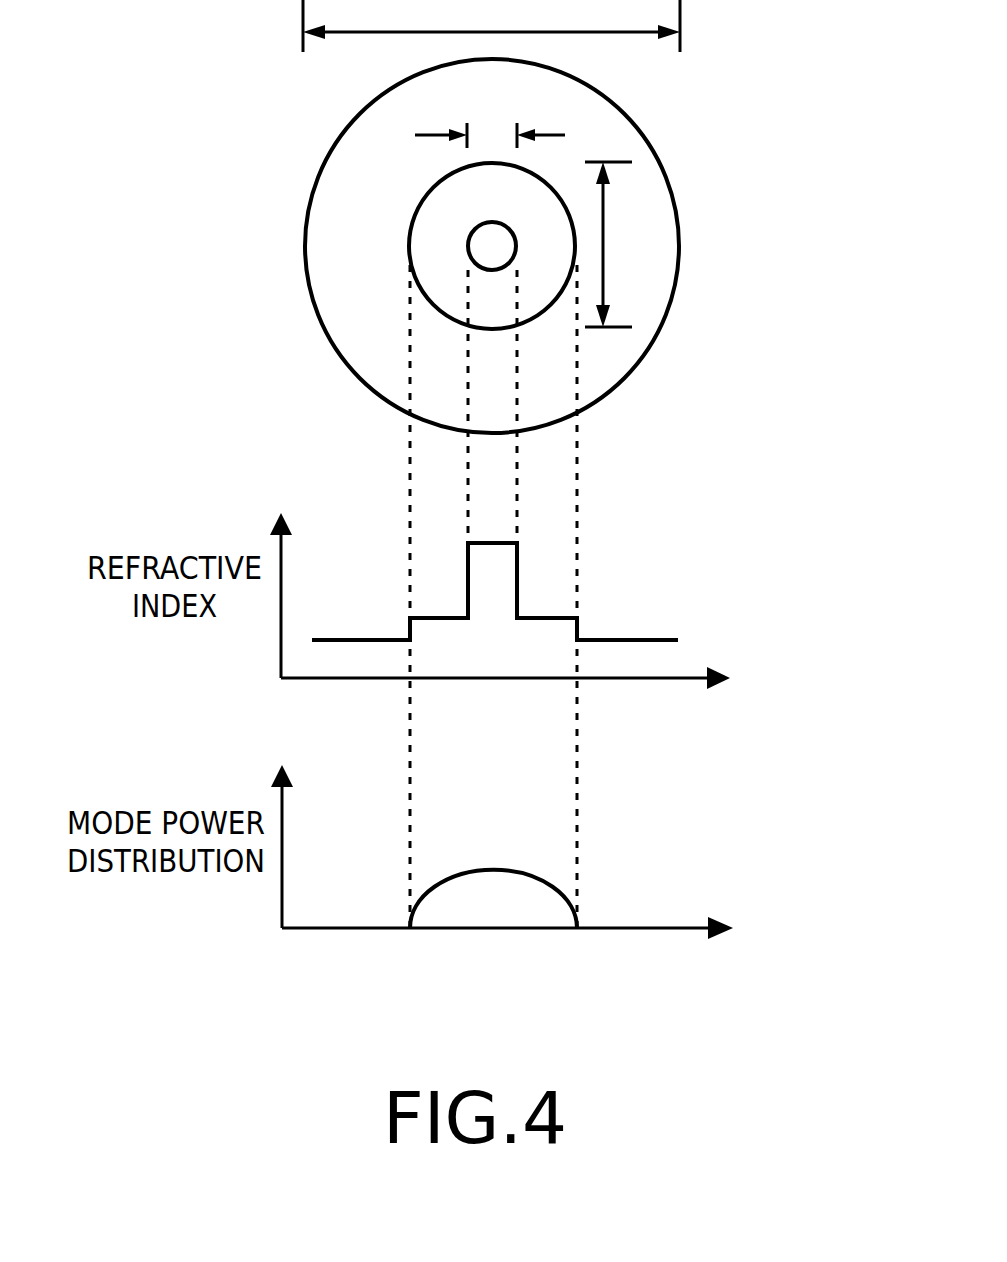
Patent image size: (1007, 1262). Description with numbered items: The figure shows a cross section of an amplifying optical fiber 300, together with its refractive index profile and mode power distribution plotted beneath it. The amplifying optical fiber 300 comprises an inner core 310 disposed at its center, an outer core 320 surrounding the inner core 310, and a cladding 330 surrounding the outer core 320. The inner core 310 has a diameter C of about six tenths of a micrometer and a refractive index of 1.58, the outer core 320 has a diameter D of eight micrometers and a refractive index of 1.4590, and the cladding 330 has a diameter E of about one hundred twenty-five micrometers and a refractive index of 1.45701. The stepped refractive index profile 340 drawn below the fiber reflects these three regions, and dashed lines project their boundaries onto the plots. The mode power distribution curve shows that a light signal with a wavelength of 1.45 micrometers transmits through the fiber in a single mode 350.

The amplifying optical fiber 300 is at (318, 138).
The inner core 310 is at (480, 232).
The outer core 320 is at (422, 236).
The cladding 330 is at (328, 307).
The refractive index profile 340 is at (607, 638).
The single mode 350 is at (557, 887).